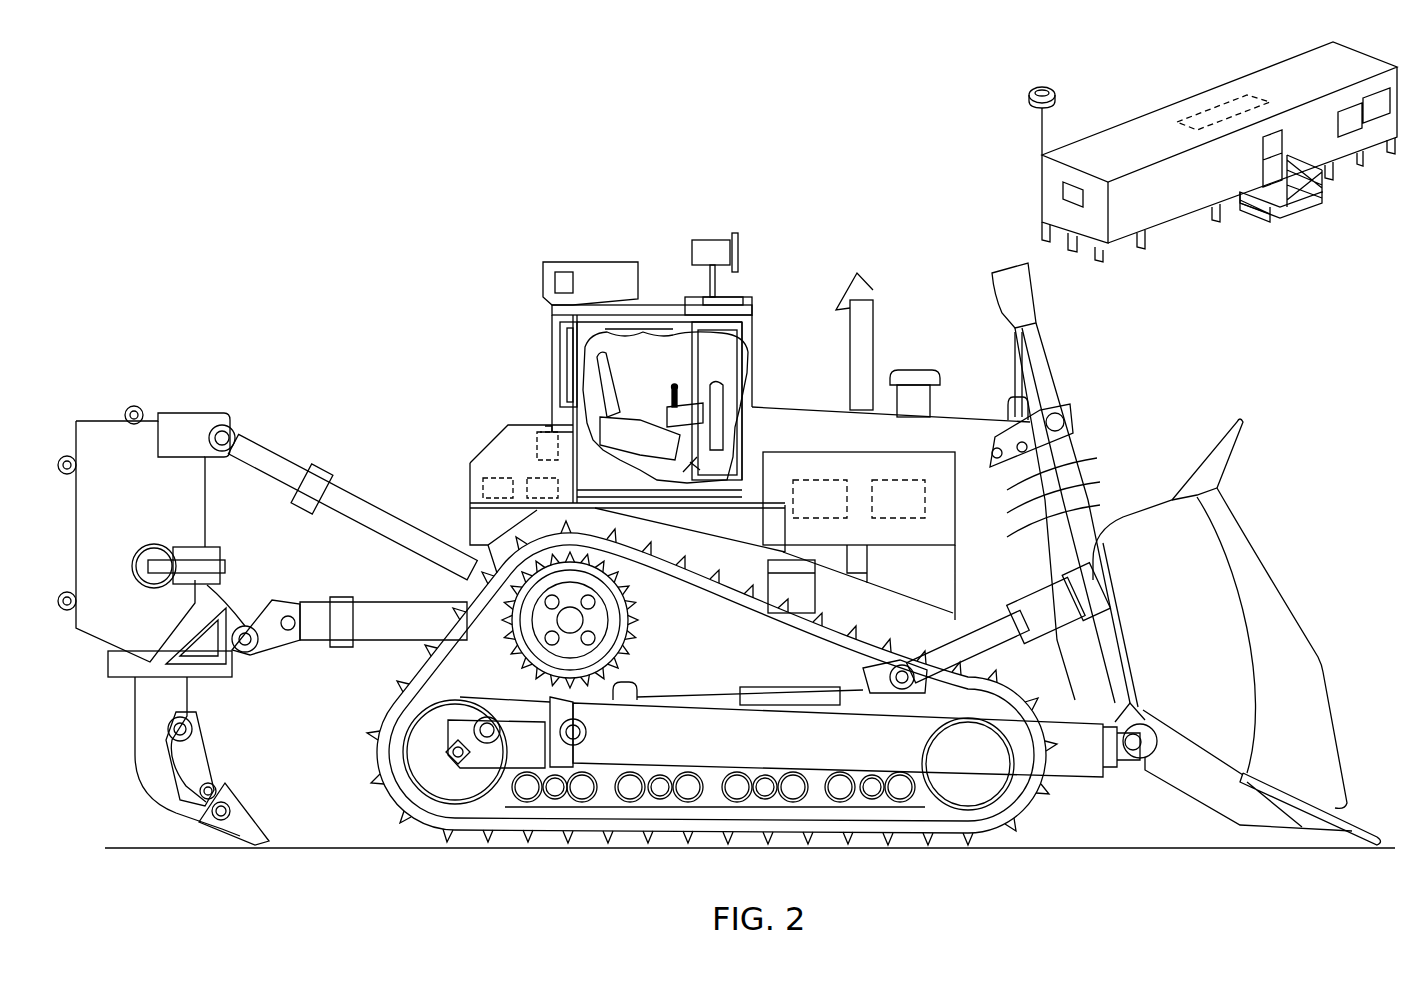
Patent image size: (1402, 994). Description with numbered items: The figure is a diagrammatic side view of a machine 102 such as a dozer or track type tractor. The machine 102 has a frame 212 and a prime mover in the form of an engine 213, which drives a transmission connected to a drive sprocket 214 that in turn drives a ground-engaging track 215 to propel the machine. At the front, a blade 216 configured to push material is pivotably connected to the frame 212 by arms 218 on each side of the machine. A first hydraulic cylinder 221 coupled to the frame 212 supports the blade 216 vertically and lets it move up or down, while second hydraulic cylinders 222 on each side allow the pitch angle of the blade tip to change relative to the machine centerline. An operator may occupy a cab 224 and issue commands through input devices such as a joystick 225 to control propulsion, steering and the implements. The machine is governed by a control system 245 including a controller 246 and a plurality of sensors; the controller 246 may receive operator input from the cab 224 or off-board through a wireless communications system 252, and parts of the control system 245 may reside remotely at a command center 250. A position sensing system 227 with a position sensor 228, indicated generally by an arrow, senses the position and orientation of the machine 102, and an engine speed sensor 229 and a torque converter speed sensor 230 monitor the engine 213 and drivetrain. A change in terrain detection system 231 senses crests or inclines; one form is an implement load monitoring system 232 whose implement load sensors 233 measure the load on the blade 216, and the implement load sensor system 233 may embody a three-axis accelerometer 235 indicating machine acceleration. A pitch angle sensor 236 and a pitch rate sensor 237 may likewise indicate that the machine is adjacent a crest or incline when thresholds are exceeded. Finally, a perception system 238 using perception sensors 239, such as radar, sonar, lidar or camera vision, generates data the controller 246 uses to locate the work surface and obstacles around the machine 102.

The machine 102 is at (295, 247).
The frame 212 is at (485, 525).
The engine 213 is at (938, 412).
The drive sprocket 214 is at (613, 633).
The track 215 is at (530, 822).
The blade 216 is at (1282, 622).
The arms 218 is at (1062, 748).
The first hydraulic cylinder 221 is at (1040, 362).
The second hydraulic cylinders 222 is at (1062, 612).
The cab 224 is at (630, 322).
The joystick 225 is at (672, 395).
The position sensing system 227 is at (552, 336).
The position sensor 228 is at (547, 428).
The engine speed sensor 229 is at (898, 515).
The torque converter speed sensor 230 is at (812, 480).
The change in terrain detection system 231 is at (1080, 509).
The implement load monitoring system 232 is at (1082, 486).
The implement load sensors 233 is at (1077, 463).
The three-axis accelerometer 235 is at (483, 488).
The pitch angle sensor 236 is at (540, 432).
The pitch rate sensor 237 is at (520, 428).
The perception system 238 is at (688, 297).
The perception sensors 239 is at (712, 240).
The control system 245 is at (527, 490).
The controller 246 is at (497, 465).
The command center 250 is at (1215, 105).
The wireless communications system 252 is at (1038, 88).